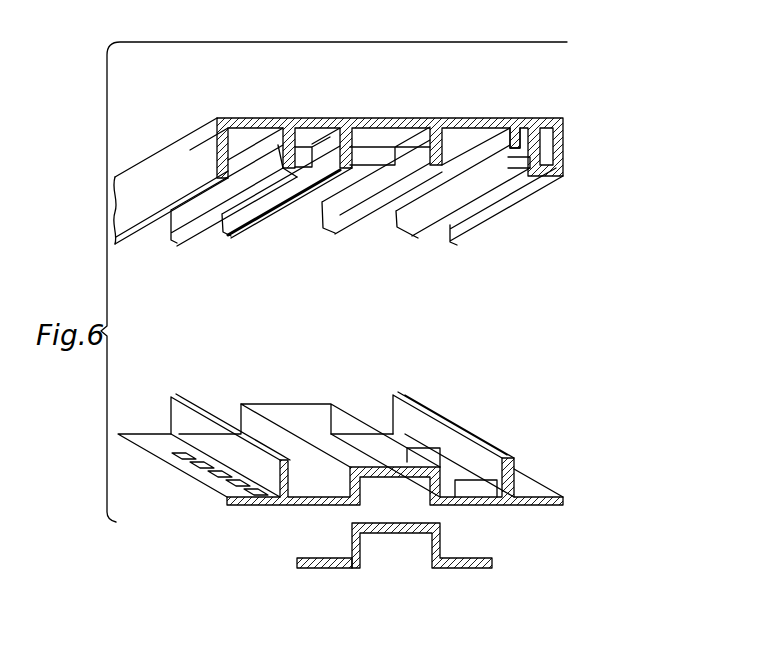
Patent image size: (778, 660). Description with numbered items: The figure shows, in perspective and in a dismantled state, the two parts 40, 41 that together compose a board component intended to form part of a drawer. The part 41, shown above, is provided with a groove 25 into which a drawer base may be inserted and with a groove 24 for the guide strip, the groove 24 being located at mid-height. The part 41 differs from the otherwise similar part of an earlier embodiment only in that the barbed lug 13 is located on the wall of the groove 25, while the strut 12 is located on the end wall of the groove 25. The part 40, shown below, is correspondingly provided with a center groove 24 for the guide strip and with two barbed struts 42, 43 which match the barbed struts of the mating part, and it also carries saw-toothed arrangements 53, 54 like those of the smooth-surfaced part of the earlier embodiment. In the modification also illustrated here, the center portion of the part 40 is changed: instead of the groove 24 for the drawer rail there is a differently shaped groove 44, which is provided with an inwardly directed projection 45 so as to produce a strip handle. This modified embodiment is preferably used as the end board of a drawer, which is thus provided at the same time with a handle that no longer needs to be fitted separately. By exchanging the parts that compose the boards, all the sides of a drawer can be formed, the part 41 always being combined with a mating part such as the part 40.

The strut 12 is at (527, 162).
The barbed lug 13 is at (450, 170).
The groove 24 is at (393, 483).
The groove 25 is at (525, 143).
The part 40 is at (540, 497).
The part 41 is at (563, 174).
The barbed strut 42 is at (246, 441).
The barbed strut 43 is at (510, 458).
The groove 44 is at (405, 548).
The inwardly directed projection 45 is at (370, 560).
The saw-toothed arrangement 53 is at (241, 483).
The saw-toothed arrangement 54 is at (465, 487).